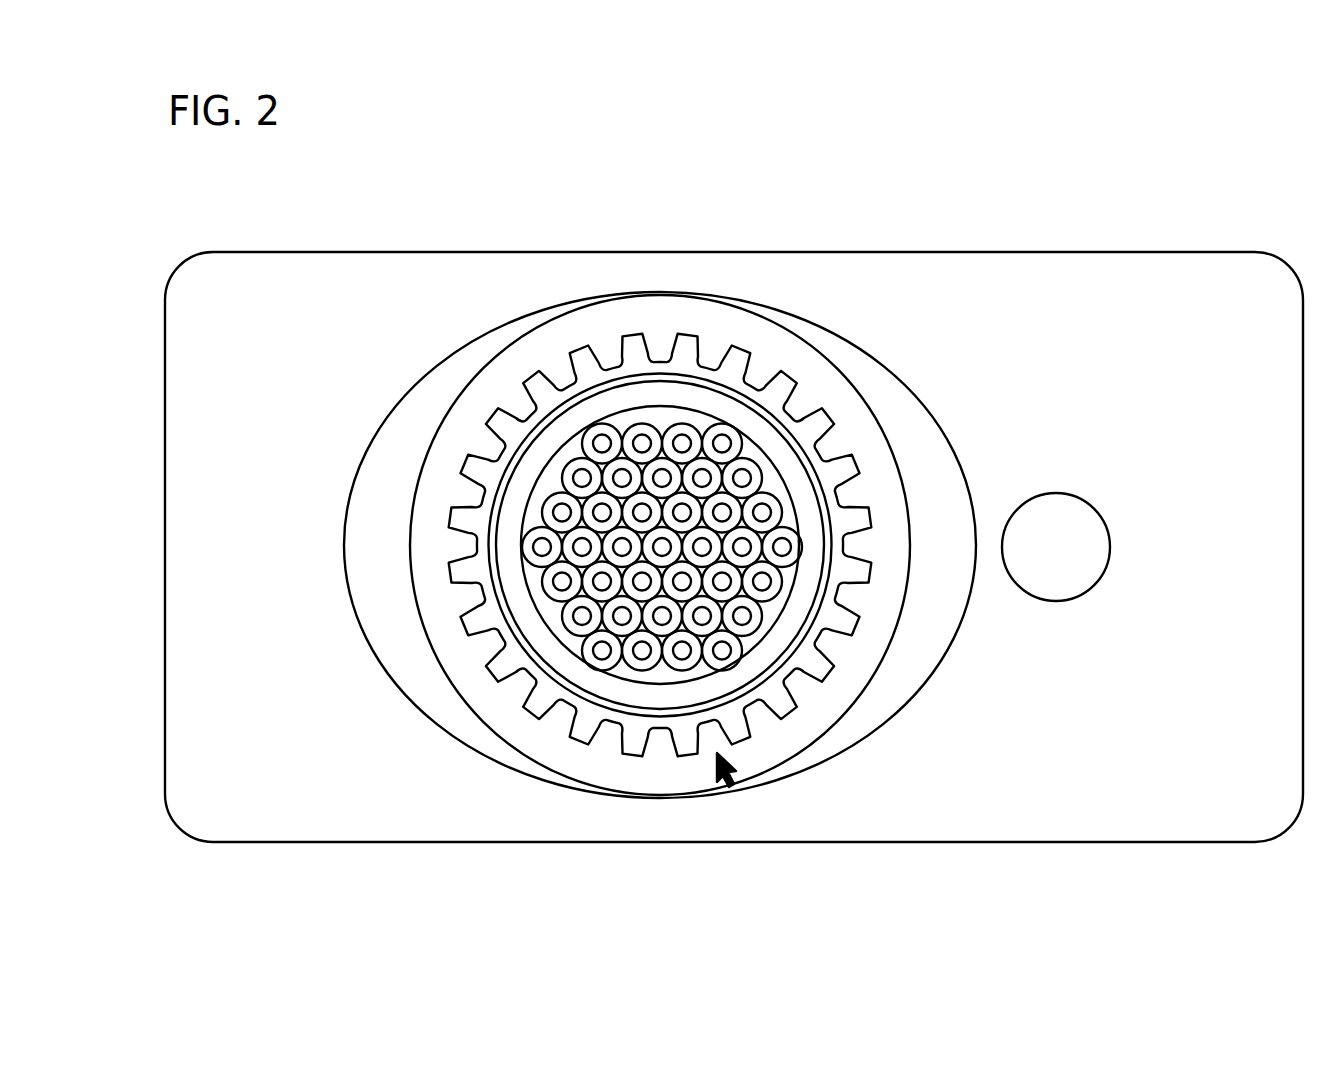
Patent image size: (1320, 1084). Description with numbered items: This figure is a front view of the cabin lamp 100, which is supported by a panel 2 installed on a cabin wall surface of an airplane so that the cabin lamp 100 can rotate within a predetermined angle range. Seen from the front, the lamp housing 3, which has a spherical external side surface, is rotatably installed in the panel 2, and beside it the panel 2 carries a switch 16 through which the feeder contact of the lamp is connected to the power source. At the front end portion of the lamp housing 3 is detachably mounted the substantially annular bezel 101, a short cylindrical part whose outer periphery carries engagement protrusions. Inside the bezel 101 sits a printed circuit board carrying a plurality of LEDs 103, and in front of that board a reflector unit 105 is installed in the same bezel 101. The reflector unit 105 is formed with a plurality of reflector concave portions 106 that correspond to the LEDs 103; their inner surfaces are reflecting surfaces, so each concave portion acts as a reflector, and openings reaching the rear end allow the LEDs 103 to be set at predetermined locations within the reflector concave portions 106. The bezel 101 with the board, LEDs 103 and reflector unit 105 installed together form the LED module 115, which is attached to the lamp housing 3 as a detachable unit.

The panel 2 is at (1047, 290).
The lamp housing 3 is at (467, 598).
The switch 16 is at (1094, 546).
The cabin lamp 100 is at (726, 778).
The bezel 101 is at (777, 395).
The LEDs 103 is at (597, 440).
The reflector unit 105 is at (762, 484).
The reflector concave portions 106 is at (682, 430).
The LED module 115 is at (660, 418).